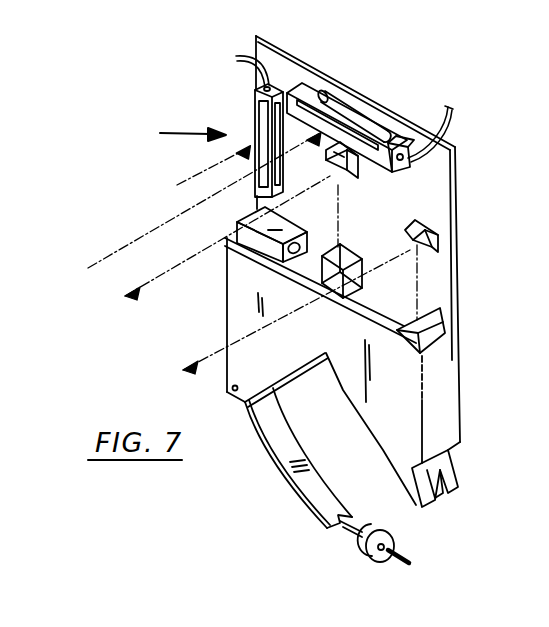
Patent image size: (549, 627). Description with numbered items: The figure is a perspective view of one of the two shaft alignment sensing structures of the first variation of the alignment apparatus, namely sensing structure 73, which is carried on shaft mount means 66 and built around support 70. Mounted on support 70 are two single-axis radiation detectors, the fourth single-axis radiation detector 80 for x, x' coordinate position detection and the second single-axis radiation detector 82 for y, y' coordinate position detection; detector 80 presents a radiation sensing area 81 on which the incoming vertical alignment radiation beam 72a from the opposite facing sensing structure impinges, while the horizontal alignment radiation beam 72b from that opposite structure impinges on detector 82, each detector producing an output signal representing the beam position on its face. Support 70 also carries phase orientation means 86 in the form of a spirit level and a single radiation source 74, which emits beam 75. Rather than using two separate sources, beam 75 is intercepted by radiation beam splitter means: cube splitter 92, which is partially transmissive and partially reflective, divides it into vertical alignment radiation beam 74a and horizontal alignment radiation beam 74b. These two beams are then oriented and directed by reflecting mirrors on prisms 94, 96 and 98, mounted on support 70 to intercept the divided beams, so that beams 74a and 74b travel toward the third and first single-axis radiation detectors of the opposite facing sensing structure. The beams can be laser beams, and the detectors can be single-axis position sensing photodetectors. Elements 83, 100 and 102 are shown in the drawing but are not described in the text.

The shaft mount means 66 is at (454, 383).
The support 70 is at (286, 50).
The vertical alignment radiation beam 72a is at (190, 184).
The horizontal alignment radiation beam 72b is at (87, 268).
The sensing structure 73 is at (177, 130).
The radiation source 74 is at (280, 230).
The vertical alignment radiation beam 74a is at (220, 352).
The horizontal alignment radiation beam 74b is at (145, 292).
The radiation beam 75 is at (322, 262).
The fourth single-axis radiation detector 80 is at (264, 87).
The radiation sensing area 81 is at (258, 118).
The second single-axis radiation detector 82 is at (308, 90).
The end block 83 is at (400, 152).
The phase orientation means 86 is at (337, 100).
The cube splitter 92 is at (338, 293).
The prism with reflecting mirror 94 is at (447, 323).
The prism with reflecting mirror 96 is at (440, 232).
The prism with reflecting mirror 98 is at (356, 168).
The spring wire 100 is at (262, 56).
The spring wire 102 is at (443, 127).